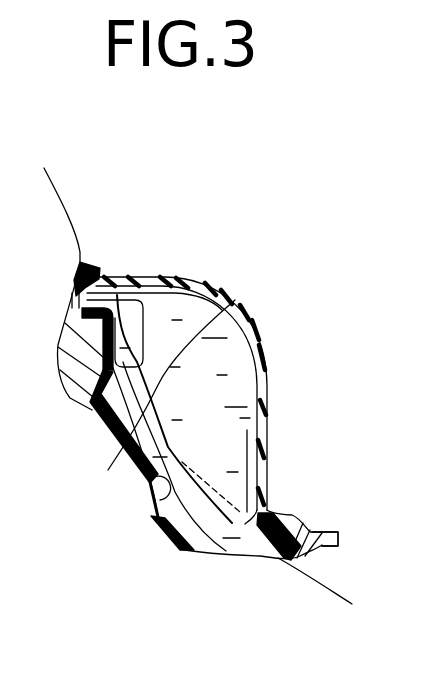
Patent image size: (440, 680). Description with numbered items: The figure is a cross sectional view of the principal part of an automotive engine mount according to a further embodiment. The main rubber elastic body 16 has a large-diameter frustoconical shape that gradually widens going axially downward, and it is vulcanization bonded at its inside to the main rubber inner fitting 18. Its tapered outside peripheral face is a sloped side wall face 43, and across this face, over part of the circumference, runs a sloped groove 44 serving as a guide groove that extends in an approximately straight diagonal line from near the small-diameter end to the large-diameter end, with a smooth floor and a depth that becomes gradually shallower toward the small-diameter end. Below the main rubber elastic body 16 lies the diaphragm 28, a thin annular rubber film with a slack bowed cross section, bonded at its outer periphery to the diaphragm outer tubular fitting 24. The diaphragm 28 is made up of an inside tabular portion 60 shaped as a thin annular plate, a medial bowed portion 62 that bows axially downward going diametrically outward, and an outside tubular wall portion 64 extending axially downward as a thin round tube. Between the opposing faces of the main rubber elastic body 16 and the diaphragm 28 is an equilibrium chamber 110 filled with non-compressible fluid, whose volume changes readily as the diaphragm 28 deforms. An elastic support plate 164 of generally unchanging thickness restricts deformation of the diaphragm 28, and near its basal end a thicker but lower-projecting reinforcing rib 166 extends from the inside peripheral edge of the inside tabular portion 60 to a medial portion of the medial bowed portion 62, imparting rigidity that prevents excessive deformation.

The main rubber elastic body 16 is at (157, 518).
The main rubber inner fitting 18 is at (77, 373).
The diaphragm outer tubular fitting 24 is at (322, 537).
The diaphragm 28 is at (246, 389).
The sloped side wall face 43 is at (117, 295).
The sloped groove 44 is at (155, 489).
The inside tabular portion 60 is at (147, 275).
The medial bowed portion 62 is at (235, 300).
The outside tubular wall portion 64 is at (268, 425).
The equilibrium chamber 110 is at (237, 464).
The elastic support plate 164 is at (226, 425).
The reinforcing rib 166 is at (108, 461).